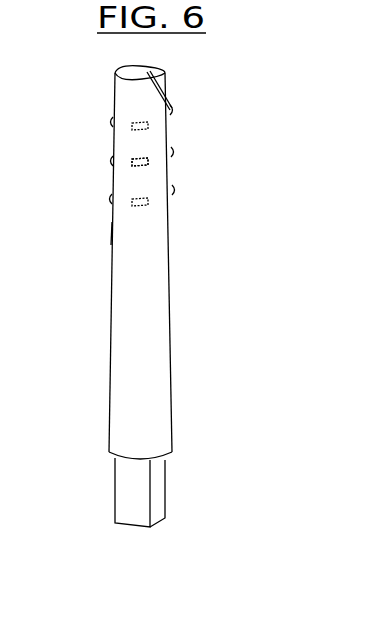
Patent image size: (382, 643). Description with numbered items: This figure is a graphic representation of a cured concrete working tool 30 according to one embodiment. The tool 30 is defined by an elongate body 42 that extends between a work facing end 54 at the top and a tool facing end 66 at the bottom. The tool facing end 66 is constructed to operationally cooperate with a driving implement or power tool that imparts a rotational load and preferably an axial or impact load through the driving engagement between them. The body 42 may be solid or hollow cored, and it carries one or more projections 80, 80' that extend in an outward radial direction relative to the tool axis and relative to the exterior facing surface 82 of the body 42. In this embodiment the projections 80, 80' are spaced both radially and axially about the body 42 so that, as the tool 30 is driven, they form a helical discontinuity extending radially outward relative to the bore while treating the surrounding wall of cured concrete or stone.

The cured concrete working tool 30 is at (167, 319).
The elongate body 42 is at (130, 262).
The work facing end 54 is at (97, 103).
The projection 80 is at (143, 155).
The projection 80' is at (81, 209).
The exterior facing surface 82 is at (110, 233).
The tool facing end 66 is at (97, 536).